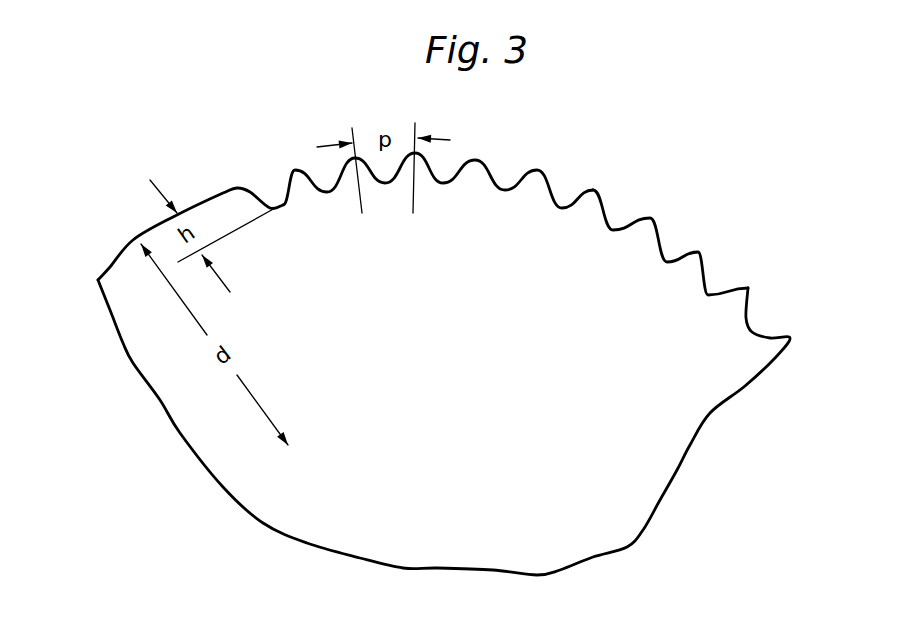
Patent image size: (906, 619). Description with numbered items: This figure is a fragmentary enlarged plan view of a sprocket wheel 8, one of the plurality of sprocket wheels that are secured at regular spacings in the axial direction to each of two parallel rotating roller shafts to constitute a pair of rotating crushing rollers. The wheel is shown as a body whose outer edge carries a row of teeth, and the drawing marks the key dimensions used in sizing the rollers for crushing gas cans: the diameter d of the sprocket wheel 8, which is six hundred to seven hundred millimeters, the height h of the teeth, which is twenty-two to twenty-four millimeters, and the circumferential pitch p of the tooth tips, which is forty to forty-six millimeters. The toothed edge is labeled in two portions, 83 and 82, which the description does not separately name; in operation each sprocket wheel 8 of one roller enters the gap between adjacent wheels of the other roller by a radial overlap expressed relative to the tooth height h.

The sprocket wheel 8 is at (640, 440).
The coarse serrations 82 is at (637, 237).
The fine serrations 83 is at (597, 189).